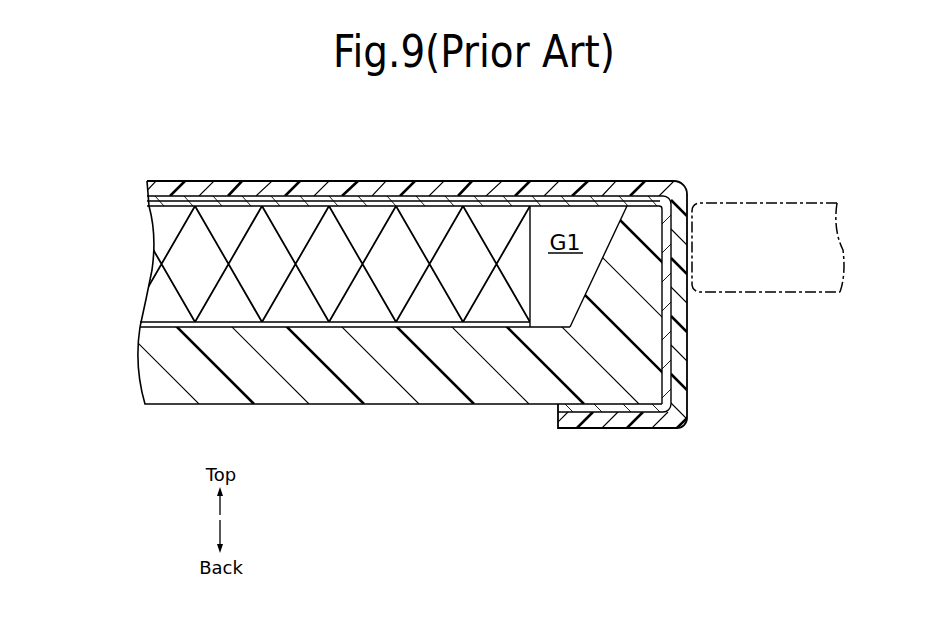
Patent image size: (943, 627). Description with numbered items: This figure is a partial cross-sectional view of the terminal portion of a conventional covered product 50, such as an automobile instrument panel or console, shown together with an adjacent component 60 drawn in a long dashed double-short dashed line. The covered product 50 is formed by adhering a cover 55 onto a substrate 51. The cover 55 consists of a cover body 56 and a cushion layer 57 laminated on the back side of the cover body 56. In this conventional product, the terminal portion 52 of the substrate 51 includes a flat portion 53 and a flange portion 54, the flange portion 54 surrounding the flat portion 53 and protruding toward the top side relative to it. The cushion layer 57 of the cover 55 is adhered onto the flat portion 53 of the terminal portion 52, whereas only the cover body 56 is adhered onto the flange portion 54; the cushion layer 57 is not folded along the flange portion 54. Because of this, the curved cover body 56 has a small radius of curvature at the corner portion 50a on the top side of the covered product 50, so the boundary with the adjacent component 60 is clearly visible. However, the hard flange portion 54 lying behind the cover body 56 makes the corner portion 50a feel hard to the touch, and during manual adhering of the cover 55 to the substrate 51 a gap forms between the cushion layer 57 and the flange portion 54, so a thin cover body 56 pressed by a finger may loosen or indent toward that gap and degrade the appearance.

The covered product 50 is at (181, 165).
The corner portion 50a is at (681, 196).
The substrate 51 is at (327, 421).
The terminal portion 52 is at (430, 368).
The flat portion 53 is at (483, 392).
The flange portion 54 is at (630, 380).
The cover 55 is at (373, 254).
The cover body 56 is at (158, 188).
The cushion layer 57 is at (90, 187).
The adjacent component 60 is at (777, 202).